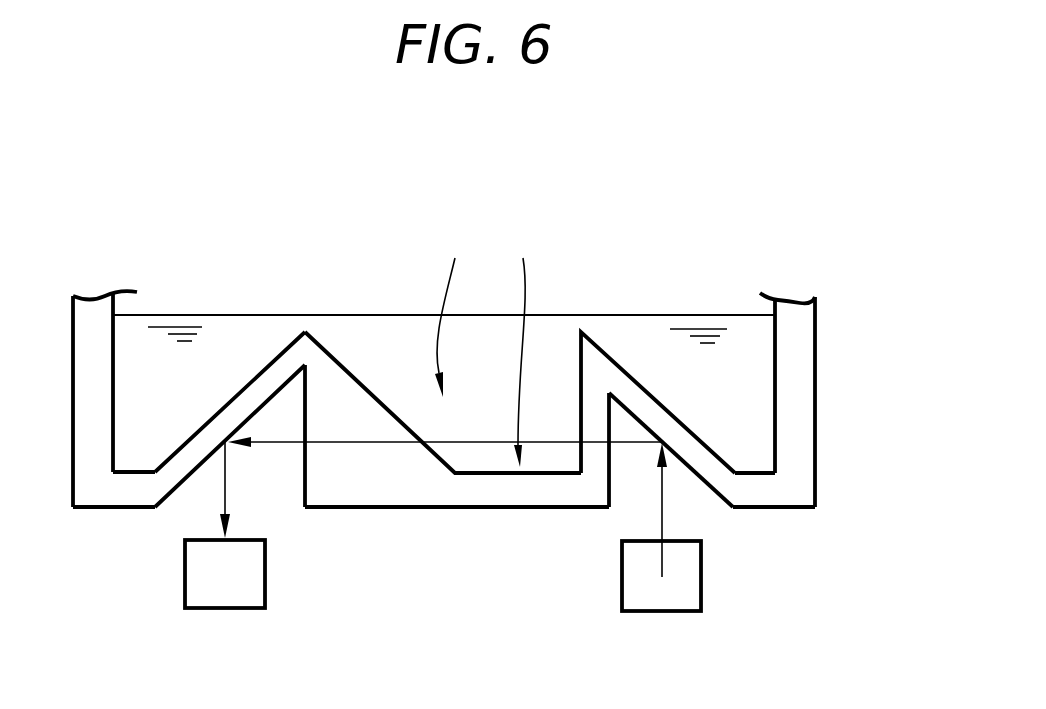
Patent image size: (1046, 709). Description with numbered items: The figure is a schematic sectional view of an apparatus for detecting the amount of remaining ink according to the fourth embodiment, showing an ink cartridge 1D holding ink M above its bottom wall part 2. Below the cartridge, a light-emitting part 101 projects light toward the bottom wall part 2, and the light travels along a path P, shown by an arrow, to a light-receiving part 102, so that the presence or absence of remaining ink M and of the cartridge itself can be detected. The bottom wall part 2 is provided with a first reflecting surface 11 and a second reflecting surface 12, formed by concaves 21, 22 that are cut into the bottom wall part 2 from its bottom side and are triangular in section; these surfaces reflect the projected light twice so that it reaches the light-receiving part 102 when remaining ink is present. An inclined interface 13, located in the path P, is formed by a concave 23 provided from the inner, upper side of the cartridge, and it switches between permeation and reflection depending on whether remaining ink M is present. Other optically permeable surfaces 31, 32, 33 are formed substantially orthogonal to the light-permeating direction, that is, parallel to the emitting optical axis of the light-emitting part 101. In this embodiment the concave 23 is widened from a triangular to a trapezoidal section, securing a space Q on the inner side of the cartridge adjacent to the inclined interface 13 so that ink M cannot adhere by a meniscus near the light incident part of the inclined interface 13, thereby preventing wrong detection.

The ink cartridge 1D is at (840, 327).
The bottom wall part 2 is at (772, 487).
The first reflecting surface 11 is at (707, 483).
The second reflecting surface 12 is at (197, 474).
The inclined interface 13 is at (380, 398).
The concave 21 is at (621, 482).
The concave 22 is at (264, 481).
The concave 23 is at (452, 314).
The optically permeable surface 31 is at (612, 483).
The optically permeable surface 32 is at (306, 487).
The optically permeable surface 33 is at (578, 363).
The light-emitting part 101 is at (660, 613).
The light-receiving part 102 is at (227, 613).
The ink M is at (700, 315).
The path P is at (401, 440).
The space Q is at (522, 350).